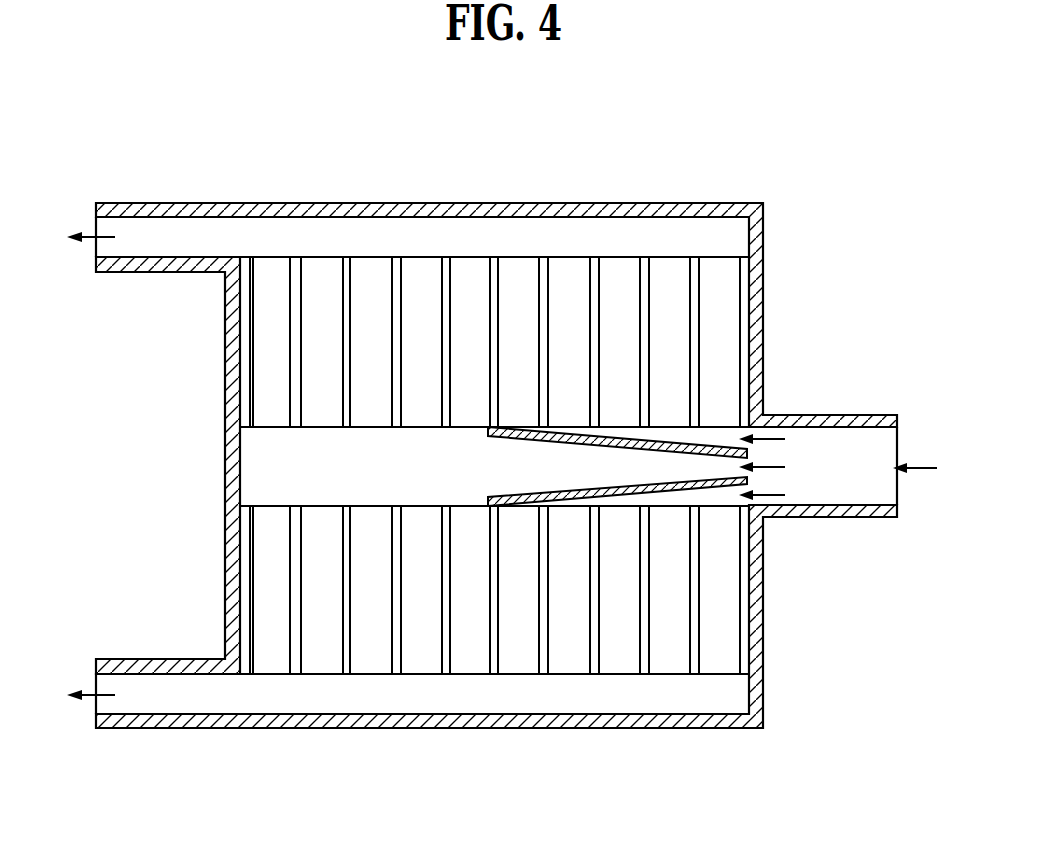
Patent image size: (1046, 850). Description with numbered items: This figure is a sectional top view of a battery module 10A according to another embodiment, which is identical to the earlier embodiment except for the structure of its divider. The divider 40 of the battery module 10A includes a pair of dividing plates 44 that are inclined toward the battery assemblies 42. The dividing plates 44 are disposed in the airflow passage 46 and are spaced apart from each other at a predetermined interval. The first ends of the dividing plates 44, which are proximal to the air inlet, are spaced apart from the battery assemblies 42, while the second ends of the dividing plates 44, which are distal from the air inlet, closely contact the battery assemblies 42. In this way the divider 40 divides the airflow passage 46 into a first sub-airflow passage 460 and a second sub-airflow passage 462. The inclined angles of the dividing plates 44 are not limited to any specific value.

The battery module 10A is at (847, 238).
The divider 40 is at (621, 425).
The battery assemblies 42 is at (513, 282).
The dividing plates 44 is at (583, 488).
The airflow passage 46 is at (255, 463).
The first sub-airflow passage 460 is at (659, 457).
The second sub-airflow passage 462 is at (735, 448).